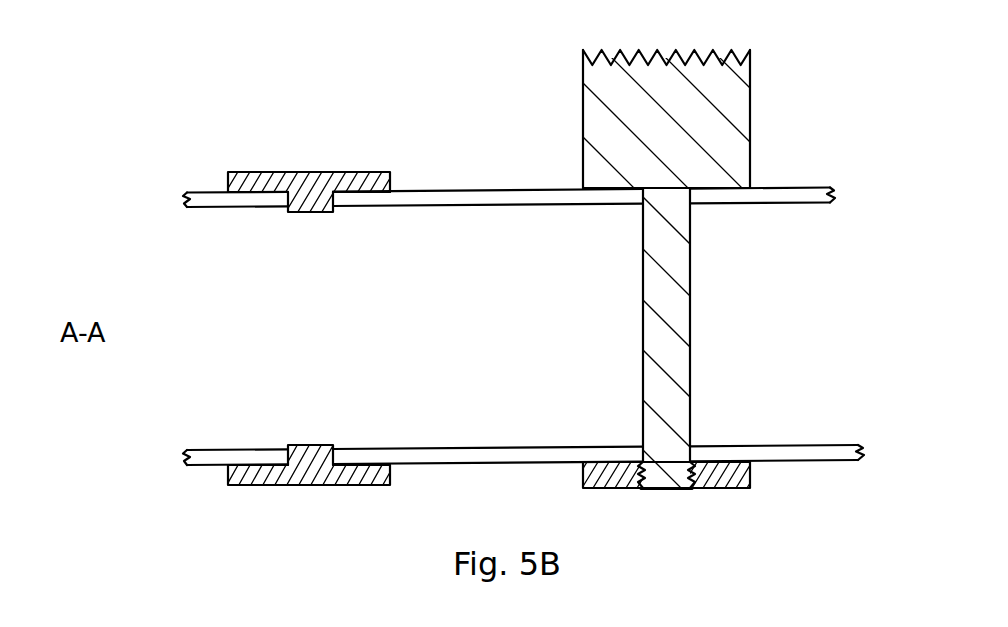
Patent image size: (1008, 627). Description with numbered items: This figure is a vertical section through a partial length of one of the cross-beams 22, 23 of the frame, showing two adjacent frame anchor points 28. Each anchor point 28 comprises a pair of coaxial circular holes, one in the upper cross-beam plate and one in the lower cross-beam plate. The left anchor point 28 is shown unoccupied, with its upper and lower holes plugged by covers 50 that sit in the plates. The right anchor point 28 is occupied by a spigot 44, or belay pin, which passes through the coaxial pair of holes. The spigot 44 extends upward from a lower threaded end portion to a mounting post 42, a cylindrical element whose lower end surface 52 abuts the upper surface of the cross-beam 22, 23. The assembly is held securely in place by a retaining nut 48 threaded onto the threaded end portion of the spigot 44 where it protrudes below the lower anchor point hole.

The cross-beam 22 is at (790, 203).
The cross-beam 23 is at (536, 362).
The frame anchor point 28 is at (287, 207).
The mounting post 42 is at (752, 102).
The spigot 44 is at (692, 362).
The retaining nut 48 is at (720, 477).
The cover 50 is at (324, 172).
The lower end surface 52 is at (722, 187).